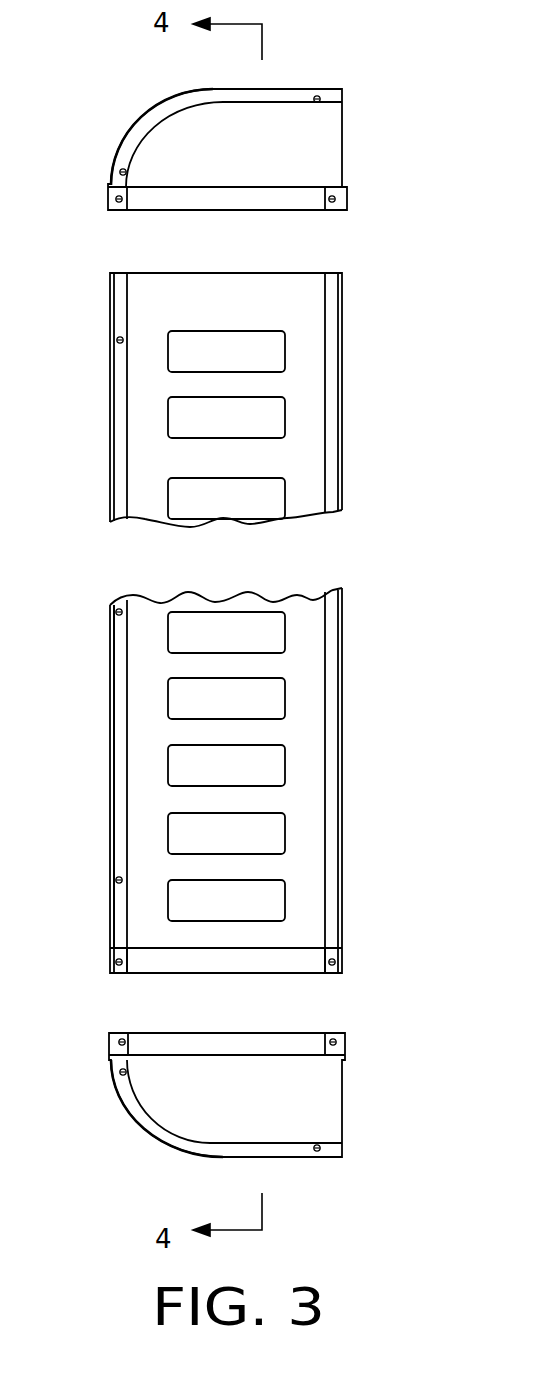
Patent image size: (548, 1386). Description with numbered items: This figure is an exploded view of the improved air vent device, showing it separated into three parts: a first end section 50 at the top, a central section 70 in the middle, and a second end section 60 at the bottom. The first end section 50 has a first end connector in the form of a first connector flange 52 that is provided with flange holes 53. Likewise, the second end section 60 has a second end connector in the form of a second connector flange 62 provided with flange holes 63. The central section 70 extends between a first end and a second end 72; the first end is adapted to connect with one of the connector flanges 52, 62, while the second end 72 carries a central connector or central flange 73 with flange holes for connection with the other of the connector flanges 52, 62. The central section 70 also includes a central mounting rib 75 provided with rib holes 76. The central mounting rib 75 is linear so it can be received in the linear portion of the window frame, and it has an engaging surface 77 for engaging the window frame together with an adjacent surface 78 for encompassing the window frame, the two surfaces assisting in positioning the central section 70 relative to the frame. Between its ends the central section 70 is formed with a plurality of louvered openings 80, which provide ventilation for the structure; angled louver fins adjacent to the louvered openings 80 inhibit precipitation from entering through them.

The first end section 50 is at (270, 172).
The first connector flange 52 is at (263, 210).
The flange holes 53 is at (231, 141).
The second end section 60 is at (243, 786).
The second connector flange 62 is at (309, 766).
The flange holes 63 is at (227, 1080).
The central section 70 is at (245, 400).
The second end 72 is at (297, 963).
The central flange 73 is at (272, 963).
The central mounting rib 75 is at (122, 815).
The rib holes 76 is at (116, 340).
The engaging surface 77 is at (122, 724).
The adjacent surface 78 is at (116, 880).
The louvered openings 80 is at (260, 699).